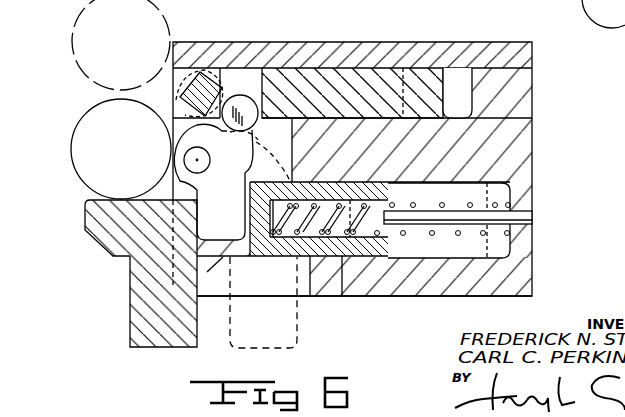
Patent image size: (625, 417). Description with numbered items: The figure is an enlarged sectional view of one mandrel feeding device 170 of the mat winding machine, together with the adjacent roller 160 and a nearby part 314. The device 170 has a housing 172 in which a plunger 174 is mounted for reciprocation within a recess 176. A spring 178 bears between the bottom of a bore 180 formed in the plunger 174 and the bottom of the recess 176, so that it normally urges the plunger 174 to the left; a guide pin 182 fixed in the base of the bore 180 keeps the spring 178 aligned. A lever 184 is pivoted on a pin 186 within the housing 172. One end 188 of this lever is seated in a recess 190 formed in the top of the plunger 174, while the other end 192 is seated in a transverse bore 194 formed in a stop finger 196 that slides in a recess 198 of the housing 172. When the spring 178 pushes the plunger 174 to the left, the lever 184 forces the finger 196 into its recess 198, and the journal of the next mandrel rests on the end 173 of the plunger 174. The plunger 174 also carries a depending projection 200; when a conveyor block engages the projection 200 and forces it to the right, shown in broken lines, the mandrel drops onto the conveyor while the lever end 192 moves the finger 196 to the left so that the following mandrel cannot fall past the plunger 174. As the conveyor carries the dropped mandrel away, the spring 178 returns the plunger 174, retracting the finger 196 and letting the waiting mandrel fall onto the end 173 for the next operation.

The roller 160 is at (84, 148).
The feeding device 170 is at (541, 162).
The housing 172 is at (530, 125).
The plunger end 173 is at (96, 244).
The plunger 174 is at (347, 294).
The recess 176 is at (455, 248).
The spring 178 is at (432, 234).
The bore 180 is at (282, 258).
The guide pin 182 is at (530, 212).
The lever 184 is at (249, 128).
The pin 186 is at (183, 161).
The lever end 188 is at (207, 272).
The recess 190 is at (263, 302).
The lever end 192 is at (236, 98).
The transverse bore 194 is at (270, 50).
The stop finger 196 is at (385, 69).
The recess 198 is at (460, 70).
The depending projection 200 is at (150, 349).
The shaft 314 is at (536, 5).